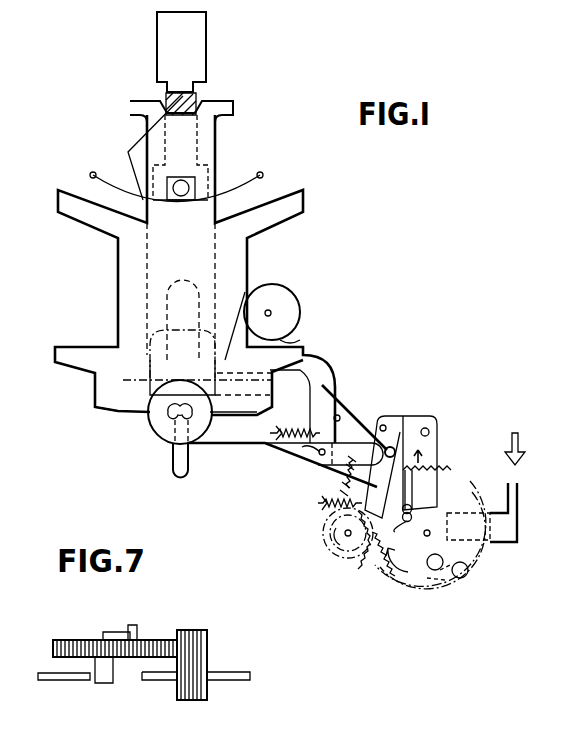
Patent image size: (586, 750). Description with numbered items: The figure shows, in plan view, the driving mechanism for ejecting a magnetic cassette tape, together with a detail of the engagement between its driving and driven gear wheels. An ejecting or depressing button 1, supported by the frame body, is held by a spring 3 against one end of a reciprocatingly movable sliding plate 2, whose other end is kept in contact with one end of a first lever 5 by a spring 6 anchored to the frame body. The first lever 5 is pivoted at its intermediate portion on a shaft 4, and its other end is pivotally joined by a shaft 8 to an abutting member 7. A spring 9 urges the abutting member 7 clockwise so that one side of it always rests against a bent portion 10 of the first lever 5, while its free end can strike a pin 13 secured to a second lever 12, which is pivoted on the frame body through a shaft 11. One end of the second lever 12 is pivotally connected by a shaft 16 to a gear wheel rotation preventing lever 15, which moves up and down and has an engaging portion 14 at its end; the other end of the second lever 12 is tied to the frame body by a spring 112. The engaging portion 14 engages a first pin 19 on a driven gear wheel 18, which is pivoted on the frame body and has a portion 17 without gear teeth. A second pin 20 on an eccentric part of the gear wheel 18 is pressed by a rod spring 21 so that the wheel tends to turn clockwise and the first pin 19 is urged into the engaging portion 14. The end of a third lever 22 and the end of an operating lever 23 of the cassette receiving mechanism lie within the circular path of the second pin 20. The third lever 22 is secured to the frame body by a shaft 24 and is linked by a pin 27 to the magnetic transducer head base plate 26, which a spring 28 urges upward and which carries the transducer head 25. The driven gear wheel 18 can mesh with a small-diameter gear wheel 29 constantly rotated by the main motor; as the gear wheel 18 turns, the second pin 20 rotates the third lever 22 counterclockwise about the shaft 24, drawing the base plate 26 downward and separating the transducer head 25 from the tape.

In FIG. 1, the depressing button 1 is at (200, 52).
In FIG. 1, the sliding plate 2 is at (222, 167).
In FIG. 1, the spring 3 is at (128, 152).
In FIG. 1, the shaft 4 is at (270, 312).
In FIG. 1, the first lever 5 is at (300, 340).
In FIG. 1, the spring 6 is at (294, 431).
In FIG. 1, the abutting member 7 is at (342, 452).
In FIG. 1, the shaft 8 is at (290, 458).
In FIG. 1, the spring 9 is at (345, 474).
In FIG. 1, the bent portion 10 is at (320, 455).
In FIG. 1, the shaft 11 is at (384, 424).
In FIG. 1, the second lever 12 is at (413, 416).
In FIG. 1, the pin 13 is at (440, 466).
In FIG. 1, the engaging portion 14 is at (422, 490).
In FIG. 1, the gear wheel rotation preventing lever 15 is at (440, 470).
In FIG. 7, the gear wheel rotation preventing lever 15 is at (115, 632).
In FIG. 1, the shaft 16 is at (429, 430).
In FIG. 1, the portion without gear teeth 17 is at (400, 524).
In FIG. 1, the driven gear wheel 18 is at (390, 578).
In FIG. 7, the driven gear wheel 18 is at (66, 640).
In FIG. 1, the first pin 19 is at (428, 537).
In FIG. 7, the first pin 19 is at (134, 625).
In FIG. 1, the second pin 20 is at (462, 578).
In FIG. 7, the second pin 20 is at (108, 683).
In FIG. 1, the rod spring 21 is at (432, 572).
In FIG. 1, the third lever 22 is at (250, 446).
In FIG. 7, the third lever 22 is at (235, 680).
In FIG. 1, the operating lever 23 is at (515, 545).
In FIG. 7, the operating lever 23 is at (63, 680).
In FIG. 1, the shaft 24 is at (339, 415).
In FIG. 1, the transducer head 25 is at (110, 385).
In FIG. 1, the magnetic transducer head base plate 26 is at (120, 418).
In FIG. 1, the pin 27 is at (168, 428).
In FIG. 1, the spring 28 is at (263, 177).
In FIG. 1, the gear wheel 29 is at (336, 548).
In FIG. 7, the gear wheel 29 is at (207, 650).
In FIG. 1, the spring 112 is at (322, 505).